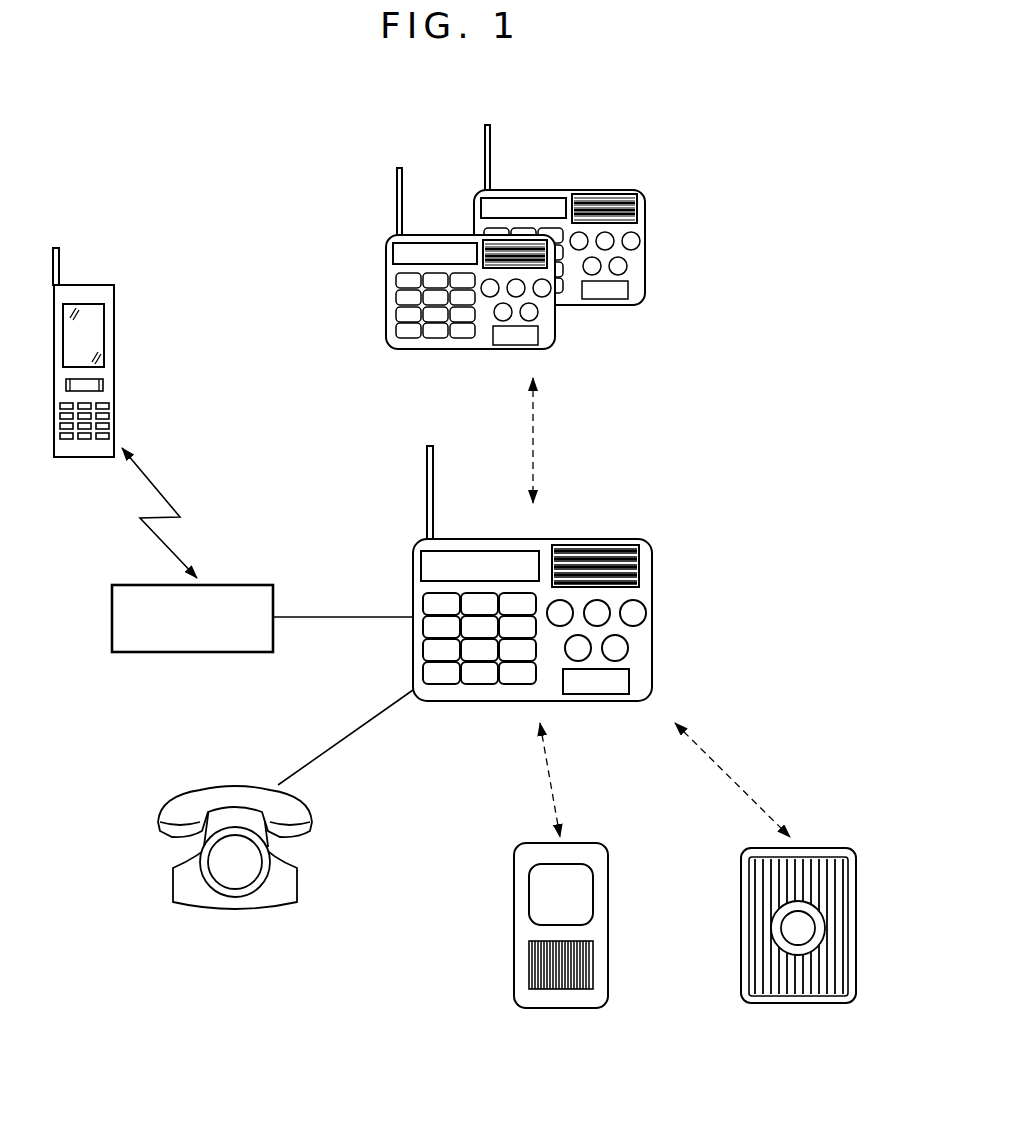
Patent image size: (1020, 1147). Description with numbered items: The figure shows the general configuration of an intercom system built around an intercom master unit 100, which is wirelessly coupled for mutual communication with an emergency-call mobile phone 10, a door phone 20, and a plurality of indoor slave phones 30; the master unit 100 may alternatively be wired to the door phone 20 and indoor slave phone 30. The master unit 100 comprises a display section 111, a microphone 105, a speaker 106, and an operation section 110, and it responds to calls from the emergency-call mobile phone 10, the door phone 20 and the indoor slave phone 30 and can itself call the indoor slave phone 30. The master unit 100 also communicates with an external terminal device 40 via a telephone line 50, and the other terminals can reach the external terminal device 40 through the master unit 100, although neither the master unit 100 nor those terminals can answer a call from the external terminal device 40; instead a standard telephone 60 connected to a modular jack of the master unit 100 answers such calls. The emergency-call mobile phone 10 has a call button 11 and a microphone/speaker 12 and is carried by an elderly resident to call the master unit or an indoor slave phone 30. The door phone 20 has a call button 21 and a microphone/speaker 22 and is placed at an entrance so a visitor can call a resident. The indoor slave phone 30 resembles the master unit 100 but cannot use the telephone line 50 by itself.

The emergency-call mobile phone 10 is at (514, 968).
The call button 11 is at (586, 891).
The microphone/speaker 12 is at (565, 988).
The door phone 20 is at (858, 960).
The call button 21 is at (783, 933).
The microphone/speaker 22 is at (803, 995).
The indoor slave phone 30 is at (386, 286).
The external terminal device 40 is at (115, 335).
The telephone line 50 is at (190, 652).
The standard telephone 60 is at (233, 910).
The intercom master unit 100 is at (596, 539).
The microphone 105 is at (660, 566).
The speaker 106 is at (677, 565).
The operation section 110 is at (660, 588).
The display section 111 is at (438, 568).